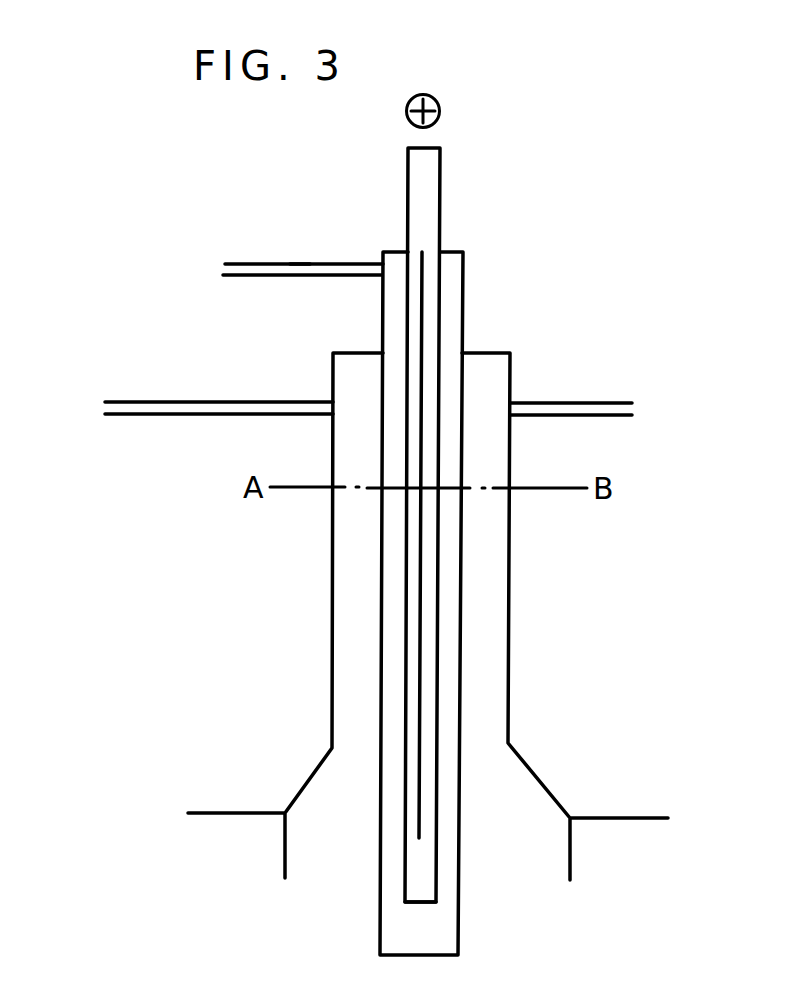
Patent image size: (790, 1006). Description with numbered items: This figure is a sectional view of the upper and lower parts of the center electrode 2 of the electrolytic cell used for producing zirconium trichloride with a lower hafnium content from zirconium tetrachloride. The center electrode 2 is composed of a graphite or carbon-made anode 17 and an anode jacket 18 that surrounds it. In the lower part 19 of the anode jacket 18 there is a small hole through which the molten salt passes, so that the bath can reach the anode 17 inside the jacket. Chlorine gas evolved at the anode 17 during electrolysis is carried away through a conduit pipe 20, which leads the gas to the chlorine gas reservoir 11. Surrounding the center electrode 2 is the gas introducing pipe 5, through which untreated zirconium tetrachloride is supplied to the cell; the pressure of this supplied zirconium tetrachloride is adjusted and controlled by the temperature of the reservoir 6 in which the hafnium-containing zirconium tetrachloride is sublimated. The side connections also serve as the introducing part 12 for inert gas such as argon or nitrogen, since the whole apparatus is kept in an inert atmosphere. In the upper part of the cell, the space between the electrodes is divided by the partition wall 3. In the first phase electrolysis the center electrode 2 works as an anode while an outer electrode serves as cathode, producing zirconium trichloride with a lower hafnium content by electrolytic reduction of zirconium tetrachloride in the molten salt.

The center electrode 2 is at (465, 590).
The partition wall 3 is at (420, 642).
The gas introducing pipe 5 is at (510, 692).
The reservoir 6 is at (180, 403).
The chlorine gas reservoir 11 is at (279, 266).
The introducing part of inert gas 12 is at (605, 411).
The anode 17 is at (440, 195).
The anode jacket 18 is at (463, 298).
The lower part 19 is at (478, 835).
The conduit pipe 20 is at (300, 263).